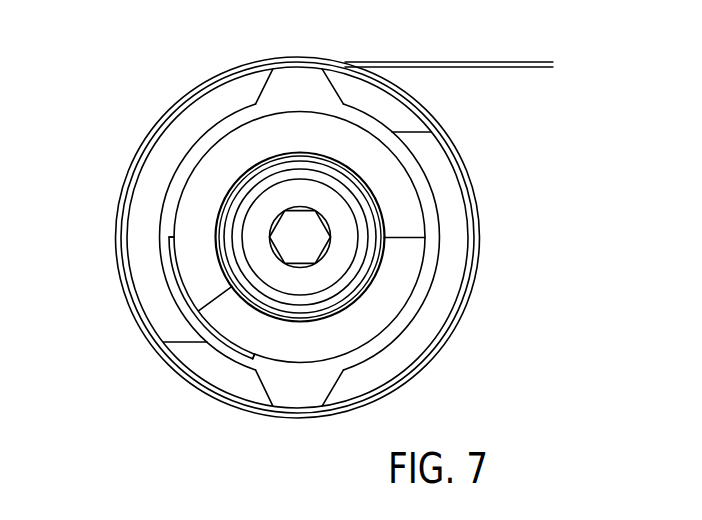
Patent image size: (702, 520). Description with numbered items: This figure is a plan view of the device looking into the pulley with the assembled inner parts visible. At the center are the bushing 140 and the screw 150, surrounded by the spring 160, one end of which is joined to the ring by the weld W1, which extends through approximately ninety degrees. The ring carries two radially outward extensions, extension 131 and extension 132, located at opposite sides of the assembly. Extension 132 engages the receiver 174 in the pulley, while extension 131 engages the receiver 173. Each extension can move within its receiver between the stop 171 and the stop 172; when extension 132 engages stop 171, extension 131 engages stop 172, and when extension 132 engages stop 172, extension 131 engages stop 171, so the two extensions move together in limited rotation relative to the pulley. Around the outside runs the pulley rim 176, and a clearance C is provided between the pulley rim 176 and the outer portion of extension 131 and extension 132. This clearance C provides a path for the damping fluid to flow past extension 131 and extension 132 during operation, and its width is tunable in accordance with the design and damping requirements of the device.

The extension 131 is at (295, 395).
The extension 132 is at (301, 78).
The bushing 140 is at (375, 224).
The screw 150 is at (343, 252).
The spring 160 is at (217, 160).
The stop 171 is at (217, 375).
The stop 172 is at (390, 113).
The receiver 173 is at (440, 308).
The receiver 174 is at (145, 203).
The pulley rim 176 is at (425, 365).
The weld W1 is at (172, 290).
The clearance C is at (546, 68).